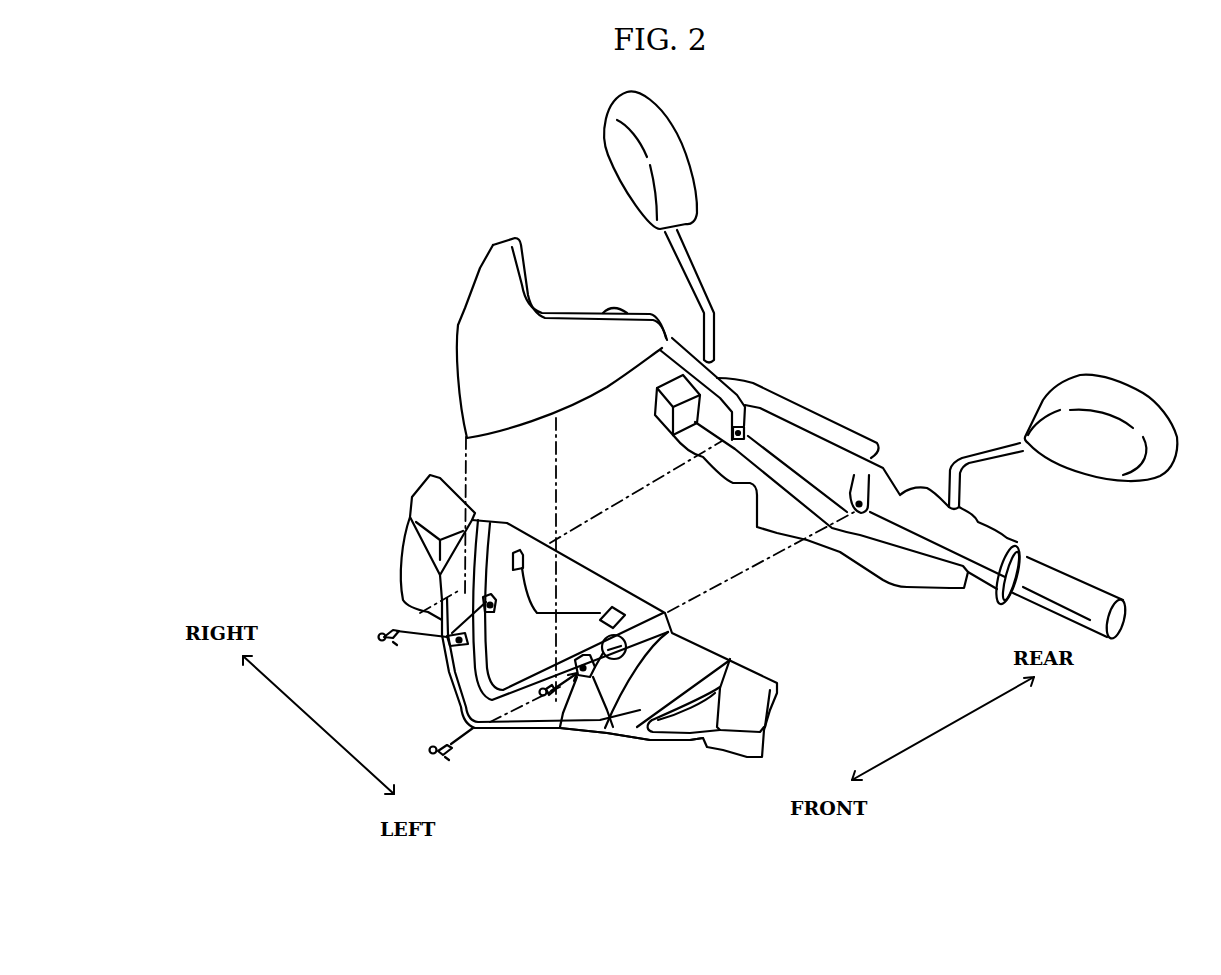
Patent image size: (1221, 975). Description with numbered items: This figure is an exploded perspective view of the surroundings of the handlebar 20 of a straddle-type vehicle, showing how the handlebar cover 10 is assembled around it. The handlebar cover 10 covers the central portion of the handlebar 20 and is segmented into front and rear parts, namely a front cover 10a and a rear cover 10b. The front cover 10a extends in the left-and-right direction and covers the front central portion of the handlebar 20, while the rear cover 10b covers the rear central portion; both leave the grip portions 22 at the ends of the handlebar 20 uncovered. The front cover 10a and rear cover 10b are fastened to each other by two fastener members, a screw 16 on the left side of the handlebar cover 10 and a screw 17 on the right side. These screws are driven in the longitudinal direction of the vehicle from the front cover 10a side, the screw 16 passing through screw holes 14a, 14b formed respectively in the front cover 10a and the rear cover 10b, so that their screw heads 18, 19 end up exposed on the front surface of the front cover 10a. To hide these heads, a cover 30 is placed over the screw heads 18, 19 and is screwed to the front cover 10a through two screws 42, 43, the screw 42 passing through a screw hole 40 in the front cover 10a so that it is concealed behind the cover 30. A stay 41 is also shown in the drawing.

The handlebar cover 10 is at (633, 745).
The front cover 10a is at (605, 717).
The rear cover 10b is at (727, 377).
The screw hole 14a is at (621, 638).
The screw hole 14b is at (860, 472).
The screw 16 is at (447, 753).
The screw 17 is at (395, 641).
The screw head 18 is at (430, 749).
The screw head 19 is at (380, 636).
The handlebar 20 is at (637, 313).
The grip portion 22 is at (610, 310).
The cover 30 is at (571, 328).
The screw hole 40 is at (462, 677).
The stay 41 is at (577, 714).
The screw 42 is at (456, 650).
The screw 43 is at (542, 700).